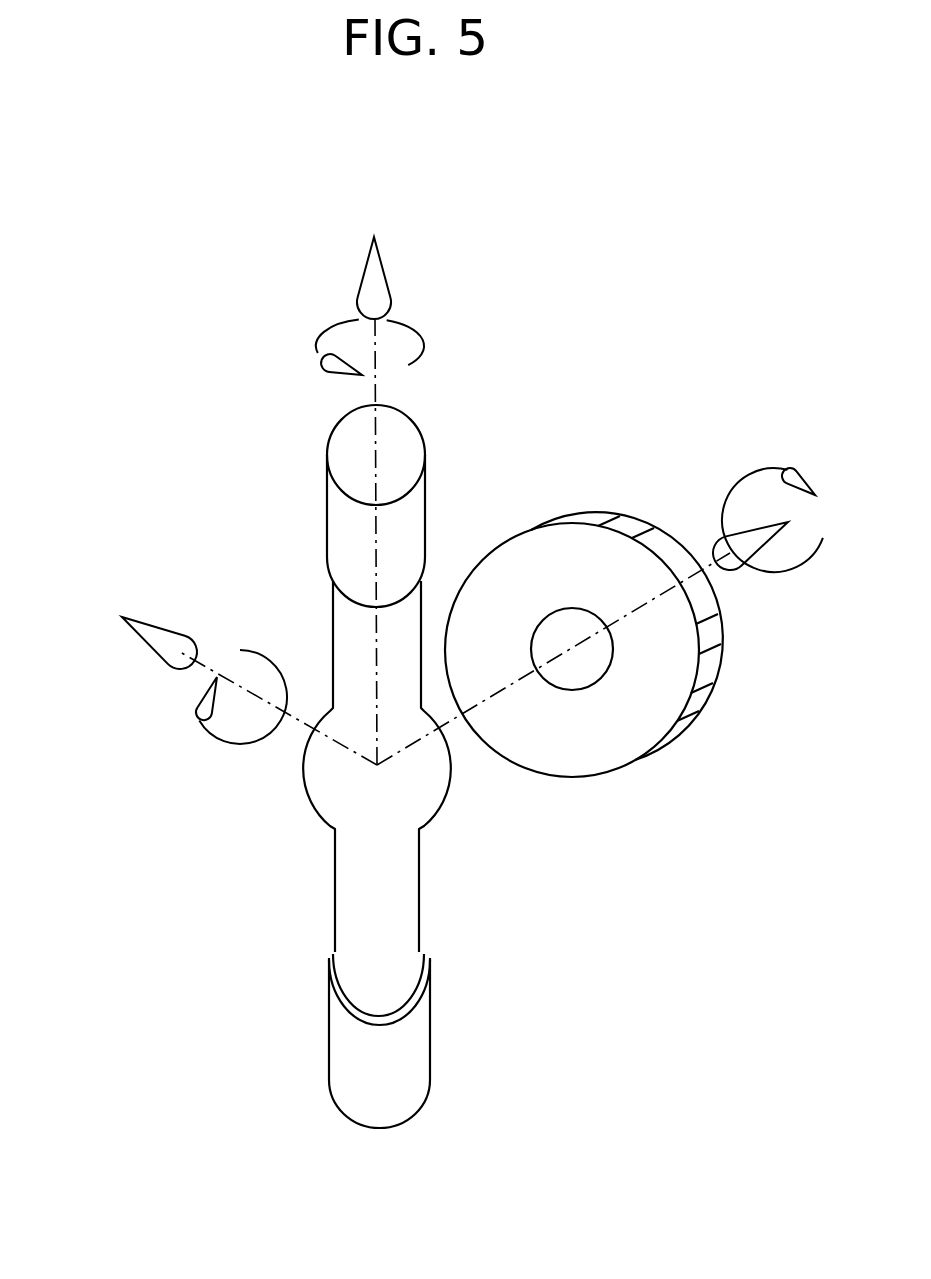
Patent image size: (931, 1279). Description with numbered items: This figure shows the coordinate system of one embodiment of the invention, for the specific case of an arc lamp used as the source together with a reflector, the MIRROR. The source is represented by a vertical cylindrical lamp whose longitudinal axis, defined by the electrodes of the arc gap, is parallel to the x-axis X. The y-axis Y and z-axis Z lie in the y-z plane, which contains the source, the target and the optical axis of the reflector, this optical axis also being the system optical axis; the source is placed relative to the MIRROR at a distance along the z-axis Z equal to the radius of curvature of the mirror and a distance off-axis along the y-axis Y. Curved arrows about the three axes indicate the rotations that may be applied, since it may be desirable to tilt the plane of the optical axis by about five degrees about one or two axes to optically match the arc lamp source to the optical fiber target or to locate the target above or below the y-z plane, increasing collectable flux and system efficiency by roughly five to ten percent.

The mirror MIRROR is at (584, 671).
The x-axis X is at (374, 483).
The y-axis Y is at (237, 680).
The z-axis Z is at (596, 635).